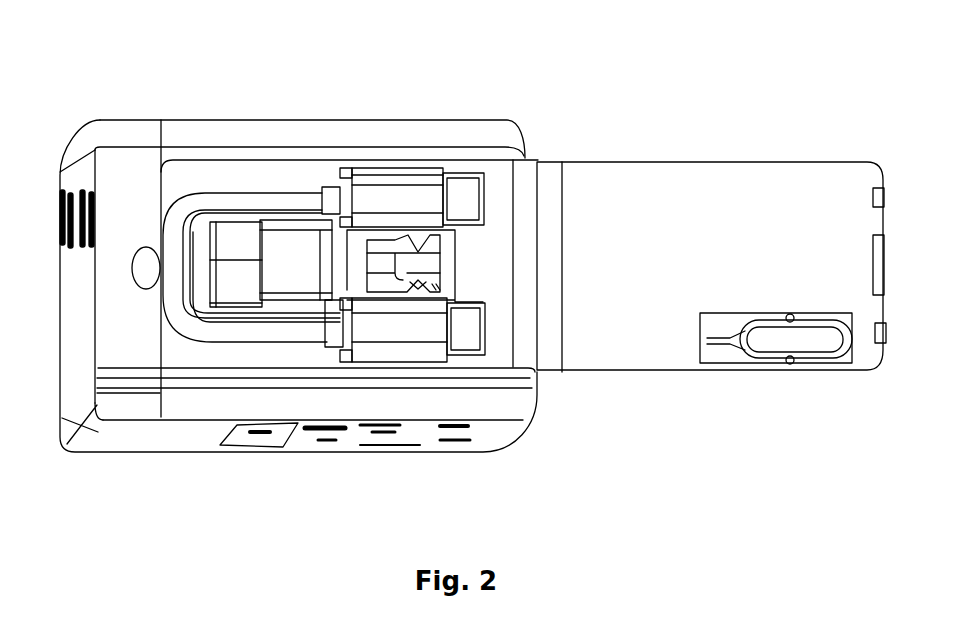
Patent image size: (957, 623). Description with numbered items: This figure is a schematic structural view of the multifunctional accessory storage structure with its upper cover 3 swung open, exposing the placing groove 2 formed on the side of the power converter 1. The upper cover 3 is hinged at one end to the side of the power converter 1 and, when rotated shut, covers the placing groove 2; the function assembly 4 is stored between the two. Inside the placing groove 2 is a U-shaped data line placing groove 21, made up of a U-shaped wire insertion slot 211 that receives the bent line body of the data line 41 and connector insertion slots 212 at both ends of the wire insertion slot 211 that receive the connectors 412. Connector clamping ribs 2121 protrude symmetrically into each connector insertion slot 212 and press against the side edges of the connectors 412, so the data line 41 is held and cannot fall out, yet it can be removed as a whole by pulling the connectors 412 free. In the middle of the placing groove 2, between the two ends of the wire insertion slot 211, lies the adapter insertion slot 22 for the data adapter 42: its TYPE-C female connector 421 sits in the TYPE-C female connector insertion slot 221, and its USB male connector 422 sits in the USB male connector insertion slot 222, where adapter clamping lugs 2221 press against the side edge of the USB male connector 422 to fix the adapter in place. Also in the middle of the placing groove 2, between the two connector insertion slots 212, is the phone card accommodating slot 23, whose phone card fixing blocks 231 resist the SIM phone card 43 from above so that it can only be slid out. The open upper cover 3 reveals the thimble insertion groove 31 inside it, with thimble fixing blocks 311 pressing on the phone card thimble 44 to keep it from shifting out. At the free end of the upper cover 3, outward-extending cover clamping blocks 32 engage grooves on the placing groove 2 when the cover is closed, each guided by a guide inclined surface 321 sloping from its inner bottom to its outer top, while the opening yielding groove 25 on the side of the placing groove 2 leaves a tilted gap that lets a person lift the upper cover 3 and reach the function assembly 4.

The power converter 1 is at (118, 133).
The placing groove 2 is at (232, 167).
The data line placing groove 21 is at (338, 45).
The wire insertion slot 211 is at (304, 188).
The connector insertion slot 212 is at (343, 168).
The connector clamping rib 2121 is at (372, 167).
The function assembly 4 is at (433, 135).
The data line 41 is at (425, 198).
The connector 412 is at (453, 197).
The data adapter 42 is at (230, 258).
The TYPE-C female connector 421 is at (227, 263).
The USB male connector 422 is at (112, 225).
The opening yielding groove 25 is at (132, 261).
The adapter insertion slot 22 is at (328, 490).
The TYPE-C female connector insertion slot 221 is at (280, 228).
The adapter clamping lug 2221 is at (250, 300).
The USB male connector insertion slot 222 is at (335, 300).
The phone card accommodating slot 23 is at (360, 292).
The phone card fixing block 231 is at (422, 292).
The SIM phone card 43 is at (440, 294).
The upper cover 3 is at (627, 185).
The thimble insertion groove 31 is at (847, 363).
The thimble fixing block 311 is at (790, 364).
The phone card thimble 44 is at (750, 357).
The cover clamping block 32 is at (880, 343).
The guide inclined surface 321 is at (883, 332).